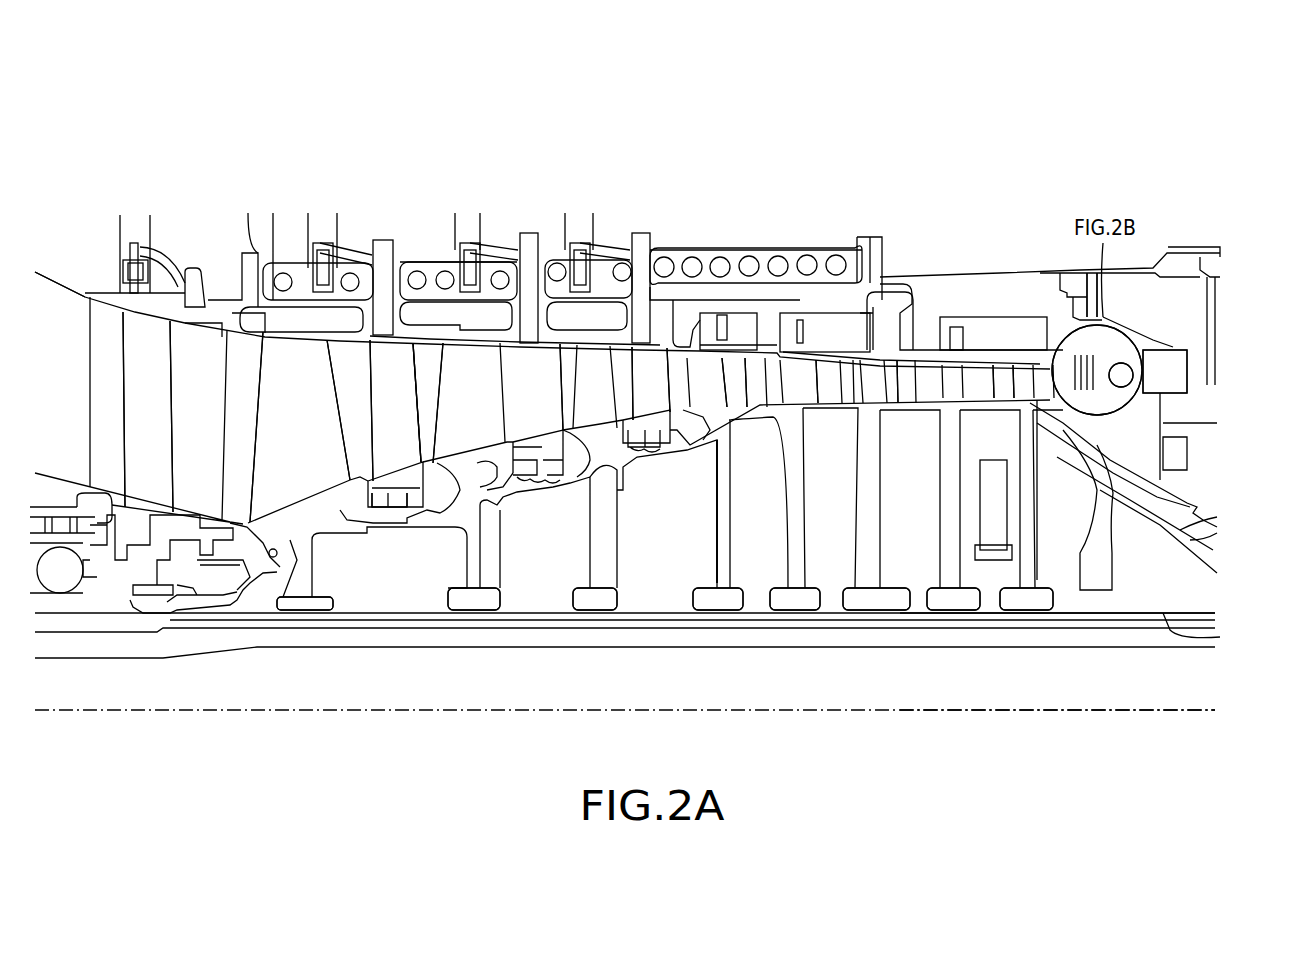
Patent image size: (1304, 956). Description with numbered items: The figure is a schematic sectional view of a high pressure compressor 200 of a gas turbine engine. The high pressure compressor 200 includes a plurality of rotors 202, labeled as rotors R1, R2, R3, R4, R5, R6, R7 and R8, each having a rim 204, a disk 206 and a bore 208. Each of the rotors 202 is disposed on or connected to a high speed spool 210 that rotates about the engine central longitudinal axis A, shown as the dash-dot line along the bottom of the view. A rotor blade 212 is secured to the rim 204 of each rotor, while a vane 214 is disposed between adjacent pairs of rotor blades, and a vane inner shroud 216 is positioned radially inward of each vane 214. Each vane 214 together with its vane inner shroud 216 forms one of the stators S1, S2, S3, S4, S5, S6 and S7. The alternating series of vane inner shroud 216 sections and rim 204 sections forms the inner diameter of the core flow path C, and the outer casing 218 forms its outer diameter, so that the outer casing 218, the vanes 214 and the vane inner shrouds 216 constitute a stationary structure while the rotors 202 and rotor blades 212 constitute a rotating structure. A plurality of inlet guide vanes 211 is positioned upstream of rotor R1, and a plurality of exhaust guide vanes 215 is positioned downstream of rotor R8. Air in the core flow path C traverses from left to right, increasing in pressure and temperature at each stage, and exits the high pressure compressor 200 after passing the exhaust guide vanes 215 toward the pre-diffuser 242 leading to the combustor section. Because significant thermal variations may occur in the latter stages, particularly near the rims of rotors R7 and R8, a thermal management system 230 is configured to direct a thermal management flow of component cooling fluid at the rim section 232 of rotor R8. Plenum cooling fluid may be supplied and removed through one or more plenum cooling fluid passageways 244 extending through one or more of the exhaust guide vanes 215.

The high pressure compressor 200 is at (283, 160).
The rotors 202 is at (703, 507).
The rim 204 is at (717, 417).
The disk 206 is at (720, 487).
The bore 208 is at (718, 552).
The high speed spool 210 is at (1110, 620).
The inlet guide vanes 211 is at (183, 418).
The rotor blade 212 is at (283, 431).
The vane 214 is at (378, 396).
The exhaust guide vanes 215 is at (1080, 382).
The vane inner shroud 216 is at (404, 483).
The outer casing 218 is at (437, 323).
The thermal management system 230 is at (1113, 430).
The rim section 232 is at (1020, 403).
The pre-diffuser 242 is at (1160, 377).
The plenum cooling fluid passageways 244 is at (1033, 340).
The core flow path C is at (527, 369).
The engine central longitudinal axis A is at (1095, 712).
The rotor R1 is at (305, 562).
The rotor R2 is at (474, 597).
The rotor R3 is at (595, 597).
The rotor R4 is at (718, 597).
The rotor R5 is at (795, 597).
The rotor R6 is at (876, 597).
The rotor R7 is at (953, 597).
The rotor R8 is at (1026, 597).
The stator S1 is at (401, 402).
The stator S2 is at (545, 387).
The stator S3 is at (651, 383).
The stator S4 is at (753, 388).
The stator S5 is at (835, 388).
The stator S6 is at (908, 390).
The stator S7 is at (992, 373).